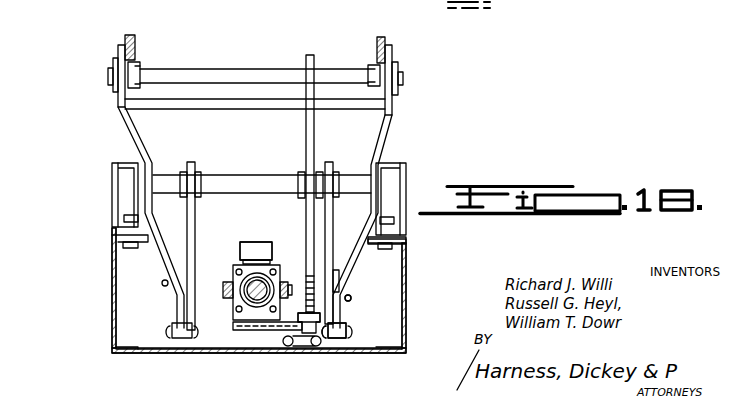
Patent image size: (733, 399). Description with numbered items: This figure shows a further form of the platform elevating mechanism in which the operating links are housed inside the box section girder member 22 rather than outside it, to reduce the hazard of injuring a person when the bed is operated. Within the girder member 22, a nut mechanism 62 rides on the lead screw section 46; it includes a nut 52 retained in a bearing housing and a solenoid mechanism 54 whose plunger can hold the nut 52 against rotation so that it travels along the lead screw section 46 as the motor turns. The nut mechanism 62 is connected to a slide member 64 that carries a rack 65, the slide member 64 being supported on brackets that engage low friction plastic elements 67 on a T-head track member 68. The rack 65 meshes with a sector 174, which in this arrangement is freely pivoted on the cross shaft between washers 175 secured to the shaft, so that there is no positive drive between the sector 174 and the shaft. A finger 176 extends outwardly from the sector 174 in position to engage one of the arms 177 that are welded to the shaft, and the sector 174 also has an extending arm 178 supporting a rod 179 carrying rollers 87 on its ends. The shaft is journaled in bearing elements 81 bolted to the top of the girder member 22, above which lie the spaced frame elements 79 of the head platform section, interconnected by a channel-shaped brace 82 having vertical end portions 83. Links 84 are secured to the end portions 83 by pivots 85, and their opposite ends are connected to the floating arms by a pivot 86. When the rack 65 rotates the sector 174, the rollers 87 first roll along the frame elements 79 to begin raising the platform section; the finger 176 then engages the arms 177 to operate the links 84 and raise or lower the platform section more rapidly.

The girder member 22 is at (407, 303).
The lead screw section 46 is at (246, 291).
The nut 52 is at (235, 285).
The solenoid mechanism 54 is at (280, 235).
The nut mechanism 62 is at (240, 246).
The slide member 64 is at (275, 335).
The rack 65 is at (297, 343).
The low friction plastic elements 67 is at (330, 352).
The T-head track member 68 is at (293, 355).
The frame elements 79 is at (134, 35).
The bearing elements 81 is at (128, 185).
The channel-shaped brace 82 is at (203, 110).
The vertical end portions 83 is at (118, 50).
The links 84 is at (160, 251).
The pivots 85 is at (108, 80).
The pivot 86 is at (342, 330).
The rollers 87 is at (140, 65).
The sector 174 is at (304, 210).
The washers 175 is at (298, 171).
The finger 176 is at (335, 278).
The arms 177 is at (195, 230).
The extending arm 178 is at (303, 132).
The rod 179 is at (222, 72).